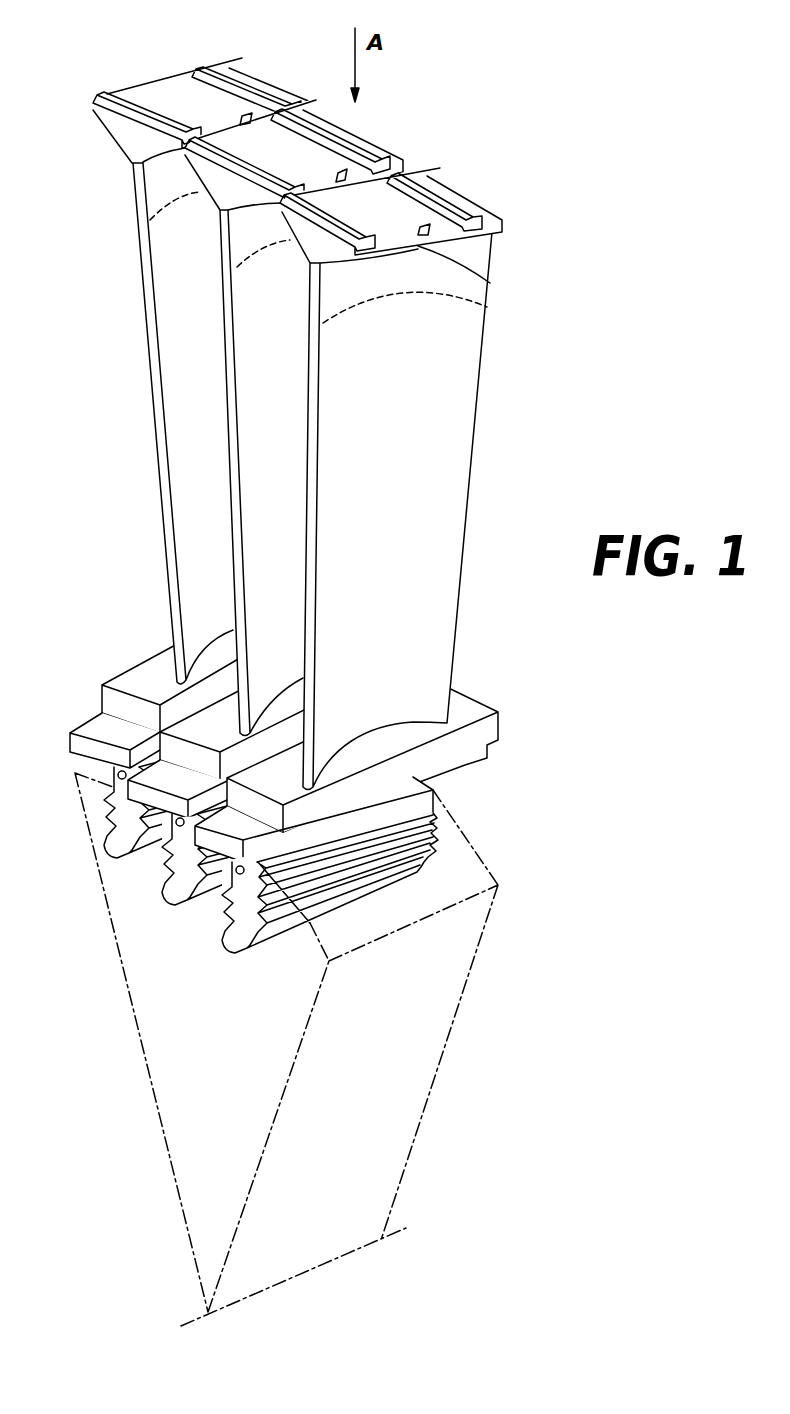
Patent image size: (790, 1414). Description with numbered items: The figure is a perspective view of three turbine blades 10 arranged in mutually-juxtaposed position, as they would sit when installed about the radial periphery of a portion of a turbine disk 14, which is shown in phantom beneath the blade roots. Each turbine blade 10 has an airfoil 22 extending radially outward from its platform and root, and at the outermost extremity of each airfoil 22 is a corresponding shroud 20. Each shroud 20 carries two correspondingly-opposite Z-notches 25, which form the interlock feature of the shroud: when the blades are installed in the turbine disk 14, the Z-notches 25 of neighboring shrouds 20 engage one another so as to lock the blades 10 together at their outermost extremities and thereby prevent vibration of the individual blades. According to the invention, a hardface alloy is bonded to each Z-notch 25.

The turbine blade 10 is at (317, 530).
The turbine disk 14 is at (422, 1026).
The shroud 20 is at (176, 86).
The airfoil 22 is at (447, 375).
The Z-notch 25 is at (250, 127).